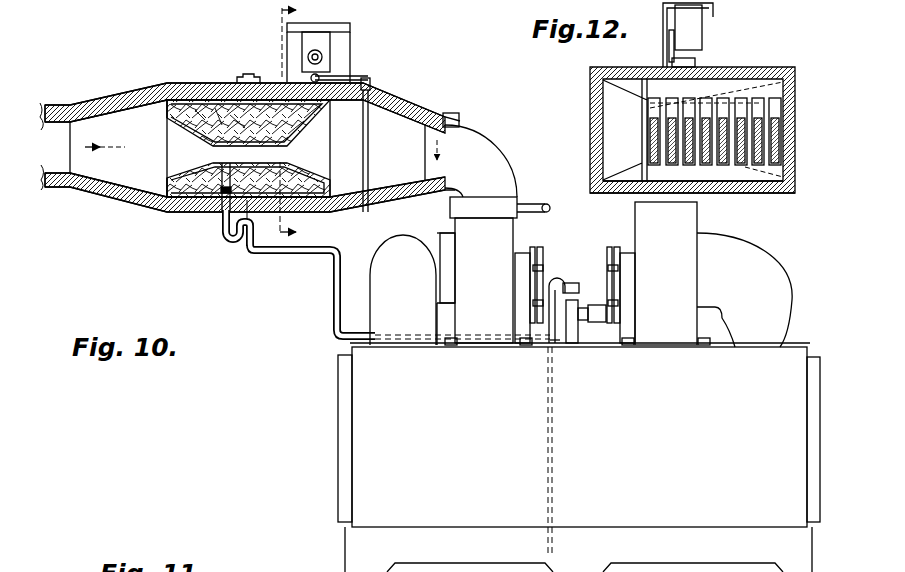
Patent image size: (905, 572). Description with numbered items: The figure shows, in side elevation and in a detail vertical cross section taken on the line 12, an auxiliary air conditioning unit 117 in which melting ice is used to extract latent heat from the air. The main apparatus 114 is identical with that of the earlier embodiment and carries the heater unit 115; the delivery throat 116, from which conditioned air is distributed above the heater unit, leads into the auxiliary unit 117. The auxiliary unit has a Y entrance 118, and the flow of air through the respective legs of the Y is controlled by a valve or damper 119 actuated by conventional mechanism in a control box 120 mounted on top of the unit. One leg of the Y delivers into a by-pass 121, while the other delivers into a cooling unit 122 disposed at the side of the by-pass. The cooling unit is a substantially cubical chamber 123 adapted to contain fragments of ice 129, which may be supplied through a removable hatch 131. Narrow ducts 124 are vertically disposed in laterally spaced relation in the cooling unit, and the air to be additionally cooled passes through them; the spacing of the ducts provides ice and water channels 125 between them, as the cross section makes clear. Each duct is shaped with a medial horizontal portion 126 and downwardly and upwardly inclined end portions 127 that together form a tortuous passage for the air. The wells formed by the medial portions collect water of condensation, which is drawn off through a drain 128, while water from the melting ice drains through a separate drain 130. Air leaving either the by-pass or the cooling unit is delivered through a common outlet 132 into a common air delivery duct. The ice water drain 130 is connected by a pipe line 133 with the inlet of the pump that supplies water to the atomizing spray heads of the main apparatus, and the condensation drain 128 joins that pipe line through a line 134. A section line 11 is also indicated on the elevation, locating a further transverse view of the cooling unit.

In FIG. 10, the section line 11- 11 is at (269, 152).
In FIG. 10, the section line 12- 12 is at (302, 124).
In FIG. 10, the main apparatus 114 is at (579, 459).
In FIG. 10, the heater unit 115 is at (505, 197).
In FIG. 10, the delivery throat 116 is at (485, 170).
In FIG. 10, the auxiliary unit 117 is at (420, 91).
In FIG. 12, the auxiliary unit 117 is at (784, 68).
In FIG. 10, the Y entrance 118 is at (405, 186).
In FIG. 10, the valve or damper 119 is at (460, 130).
In FIG. 10, the control box 120 is at (345, 46).
In FIG. 12, the control box 120 is at (700, 32).
In FIG. 12, the by-pass 121 is at (616, 97).
In FIG. 10, the cooling unit 122 is at (148, 197).
In FIG. 12, the cooling unit 122 is at (638, 190).
In FIG. 10, the chamber 123 is at (178, 97).
In FIG. 12, the chamber 123 is at (708, 89).
In FIG. 10, the ducts 124 is at (187, 151).
In FIG. 12, the ducts 124 is at (660, 170).
In FIG. 12, the ice and water channels 125 is at (777, 150).
In FIG. 10, the medial horizontal portion 126 is at (262, 148).
In FIG. 10, the inclined end portions 127 is at (172, 128).
In FIG. 10, the drain 128 is at (215, 213).
In FIG. 10, the ice 129 is at (218, 108).
In FIG. 10, the drain 130 is at (262, 175).
In FIG. 10, the removable hatch 131 is at (270, 58).
In FIG. 10, the common outlet 132 is at (55, 186).
In FIG. 10, the pipe line 133 is at (335, 300).
In FIG. 10, the line 134 is at (236, 252).